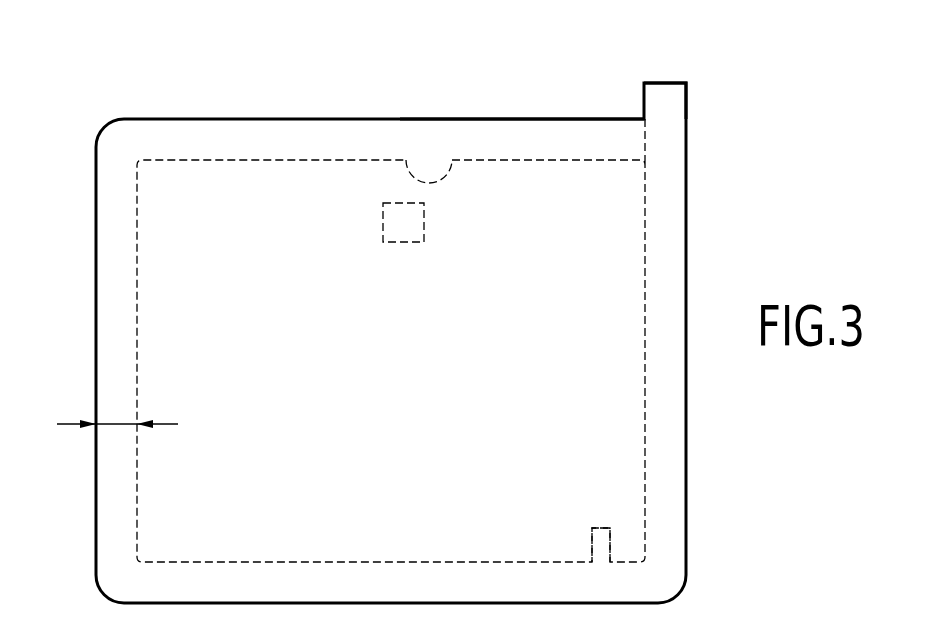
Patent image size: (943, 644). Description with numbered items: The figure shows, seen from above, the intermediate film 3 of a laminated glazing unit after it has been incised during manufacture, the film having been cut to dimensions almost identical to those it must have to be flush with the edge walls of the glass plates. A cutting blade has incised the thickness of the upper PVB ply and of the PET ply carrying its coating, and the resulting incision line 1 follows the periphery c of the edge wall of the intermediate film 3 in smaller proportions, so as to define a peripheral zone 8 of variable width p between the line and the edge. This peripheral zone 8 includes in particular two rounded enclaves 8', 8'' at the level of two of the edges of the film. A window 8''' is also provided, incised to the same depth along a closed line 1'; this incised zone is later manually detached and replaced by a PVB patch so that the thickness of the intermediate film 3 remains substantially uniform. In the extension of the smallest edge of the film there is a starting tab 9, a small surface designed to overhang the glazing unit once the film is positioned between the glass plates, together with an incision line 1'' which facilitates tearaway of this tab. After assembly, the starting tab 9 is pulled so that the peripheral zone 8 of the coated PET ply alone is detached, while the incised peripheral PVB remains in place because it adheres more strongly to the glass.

The intermediate film 3 is at (391, 90).
The peripheral zone 8 is at (391, 329).
The rounded enclave 8' is at (453, 189).
The rounded enclave 8'' is at (590, 521).
The window 8''' is at (378, 216).
The starting tab 9 is at (671, 92).
The periphery c is at (527, 119).
The incision line 1 is at (391, 361).
The closed incision line 1' is at (396, 270).
The tab incision line 1'' is at (694, 139).
The width P is at (117, 413).